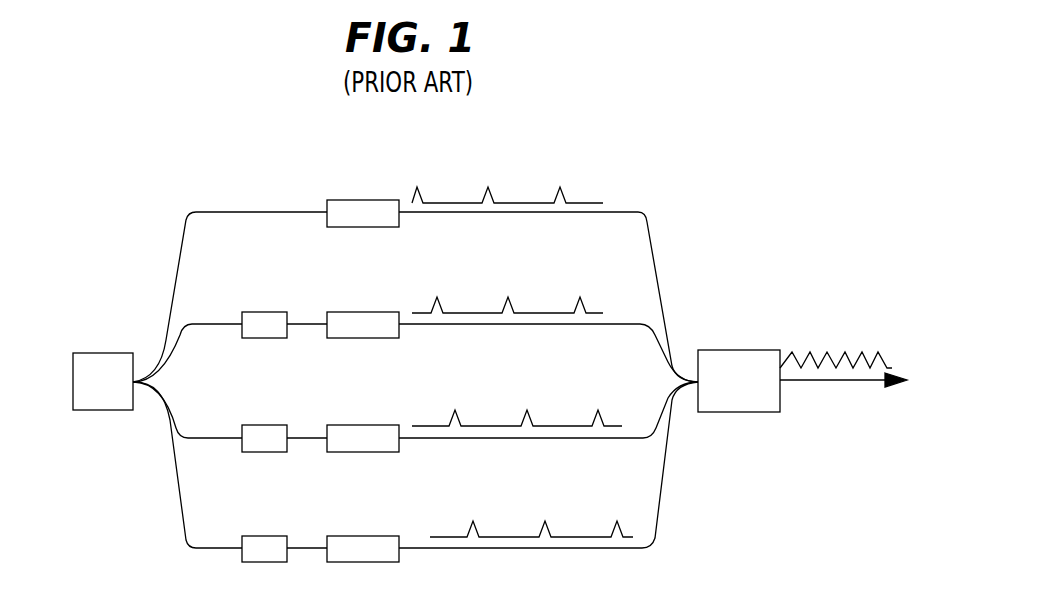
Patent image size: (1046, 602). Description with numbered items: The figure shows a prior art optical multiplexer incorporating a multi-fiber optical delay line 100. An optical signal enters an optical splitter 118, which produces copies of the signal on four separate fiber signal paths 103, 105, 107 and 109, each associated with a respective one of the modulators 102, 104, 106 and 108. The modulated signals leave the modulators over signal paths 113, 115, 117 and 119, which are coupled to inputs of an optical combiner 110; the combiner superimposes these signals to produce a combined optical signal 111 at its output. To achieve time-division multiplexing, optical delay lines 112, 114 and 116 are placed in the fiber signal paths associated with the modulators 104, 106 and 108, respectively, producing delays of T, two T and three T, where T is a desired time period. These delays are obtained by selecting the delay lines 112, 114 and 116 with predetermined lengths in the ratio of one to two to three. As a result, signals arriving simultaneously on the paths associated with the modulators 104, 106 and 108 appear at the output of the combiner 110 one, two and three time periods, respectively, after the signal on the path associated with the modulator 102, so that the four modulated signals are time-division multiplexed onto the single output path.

The multi-fiber optical delay line 100 is at (594, 106).
The modulator 102 is at (362, 200).
The fiber signal path 103 is at (236, 212).
The modulator 104 is at (367, 312).
The fiber signal path 105 is at (184, 327).
The modulator 106 is at (367, 425).
The fiber signal path 107 is at (174, 429).
The modulator 108 is at (367, 536).
The fiber signal path 109 is at (189, 548).
The optical combiner 110 is at (748, 412).
The combined optical signal 111 is at (816, 356).
The optical delay line 112 is at (254, 338).
The signal path 113 is at (636, 212).
The optical delay line 114 is at (254, 452).
The signal path 115 is at (624, 324).
The optical delay line 116 is at (254, 562).
The signal path 117 is at (626, 438).
The optical splitter 118 is at (102, 410).
The signal path 119 is at (614, 548).